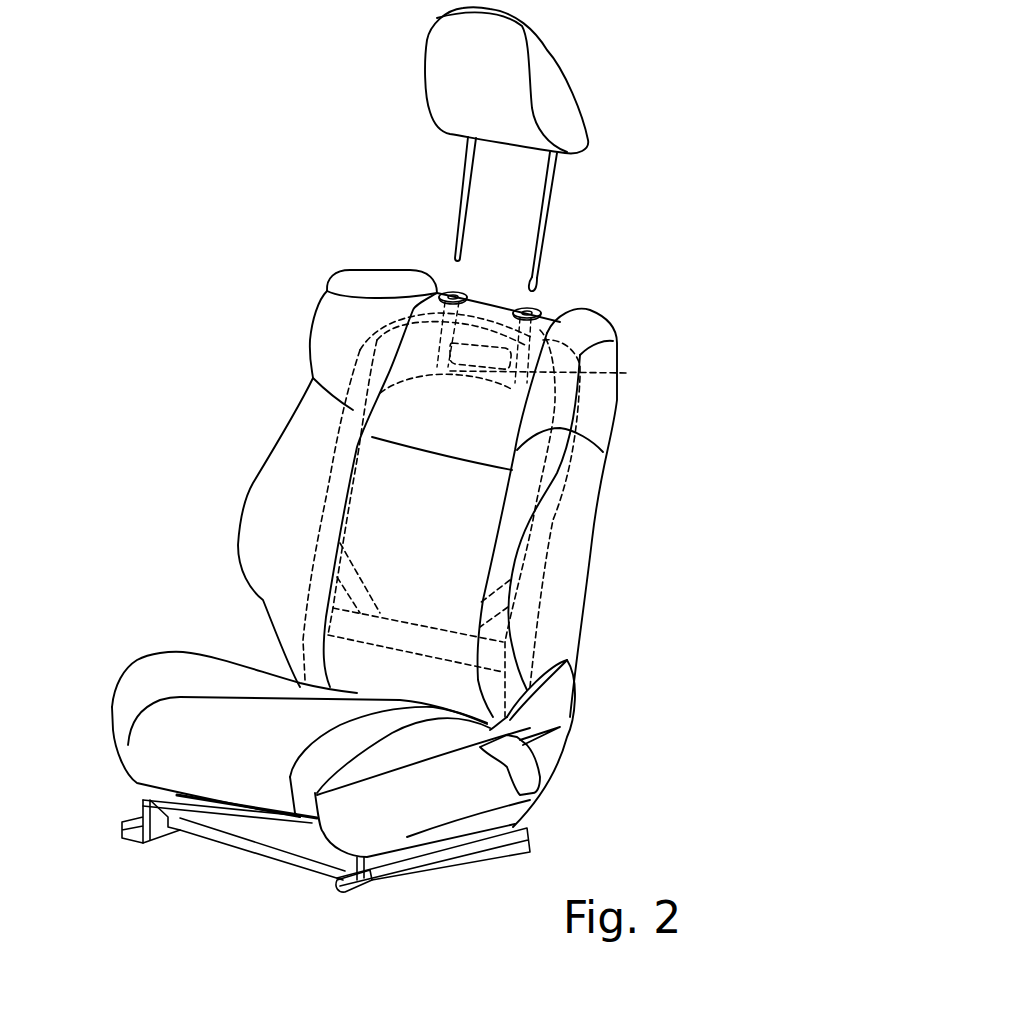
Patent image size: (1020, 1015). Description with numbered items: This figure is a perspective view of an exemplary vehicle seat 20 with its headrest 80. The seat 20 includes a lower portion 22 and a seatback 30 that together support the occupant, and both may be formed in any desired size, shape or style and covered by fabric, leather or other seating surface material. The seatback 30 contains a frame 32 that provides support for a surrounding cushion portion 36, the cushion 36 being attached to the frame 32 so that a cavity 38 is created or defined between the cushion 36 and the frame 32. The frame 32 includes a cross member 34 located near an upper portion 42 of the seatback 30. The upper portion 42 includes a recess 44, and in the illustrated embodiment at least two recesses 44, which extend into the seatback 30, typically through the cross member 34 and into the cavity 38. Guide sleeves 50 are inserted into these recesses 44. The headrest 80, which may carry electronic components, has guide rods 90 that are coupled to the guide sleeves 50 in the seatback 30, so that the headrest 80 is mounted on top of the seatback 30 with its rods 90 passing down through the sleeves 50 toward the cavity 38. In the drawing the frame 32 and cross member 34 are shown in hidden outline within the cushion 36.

The vehicle seat 20 is at (193, 905).
The lower portion 22 is at (470, 793).
The seatback 30 is at (580, 530).
The frame 32 is at (357, 372).
The cross member 34 is at (627, 373).
The cushion portion 36 is at (270, 507).
The cavity 38 is at (480, 440).
The upper portion 42 is at (417, 303).
The recess 44 is at (538, 312).
The guide sleeve 50 is at (447, 292).
The headrest 80 is at (563, 108).
The guide rod 90 is at (552, 208).